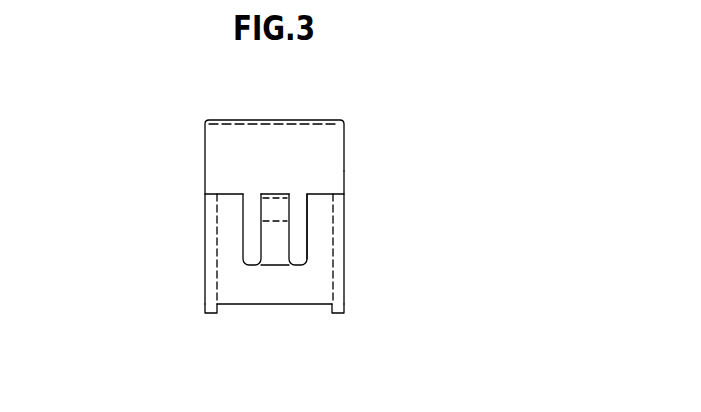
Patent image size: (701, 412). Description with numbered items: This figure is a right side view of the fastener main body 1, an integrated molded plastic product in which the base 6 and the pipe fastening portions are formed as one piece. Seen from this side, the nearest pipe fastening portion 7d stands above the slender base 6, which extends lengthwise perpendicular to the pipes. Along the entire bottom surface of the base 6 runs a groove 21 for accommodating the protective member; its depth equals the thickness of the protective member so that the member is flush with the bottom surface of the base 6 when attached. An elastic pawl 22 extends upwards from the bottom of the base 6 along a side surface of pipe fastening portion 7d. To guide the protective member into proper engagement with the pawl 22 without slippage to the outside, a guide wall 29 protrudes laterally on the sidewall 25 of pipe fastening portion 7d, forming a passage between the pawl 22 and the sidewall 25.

The fastener main body 1 is at (360, 128).
The sidewall 25 is at (223, 153).
The pipe fastening portion 7d is at (346, 171).
The guide wall 29 is at (228, 217).
The elastic pawl 22 is at (268, 237).
The base 6 is at (205, 309).
The groove 21 is at (337, 311).